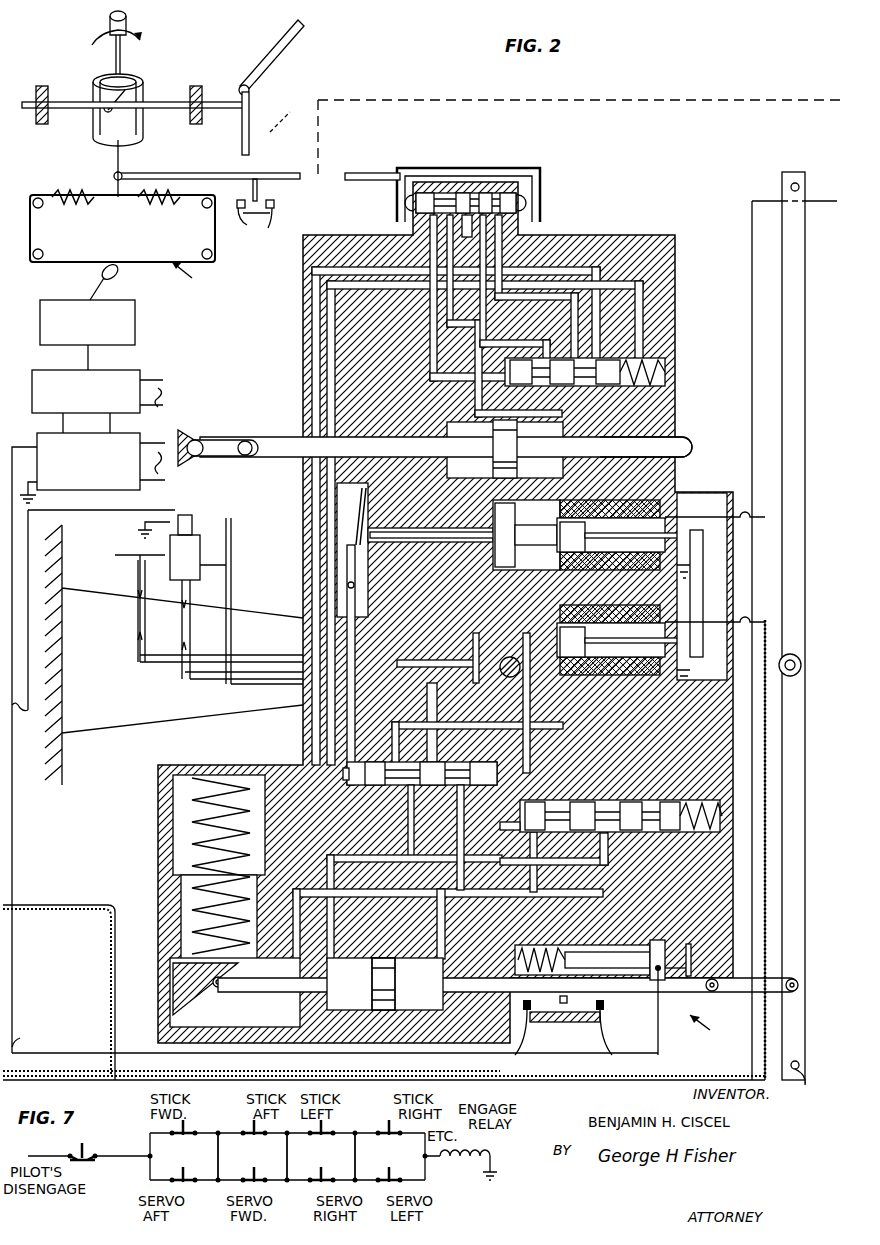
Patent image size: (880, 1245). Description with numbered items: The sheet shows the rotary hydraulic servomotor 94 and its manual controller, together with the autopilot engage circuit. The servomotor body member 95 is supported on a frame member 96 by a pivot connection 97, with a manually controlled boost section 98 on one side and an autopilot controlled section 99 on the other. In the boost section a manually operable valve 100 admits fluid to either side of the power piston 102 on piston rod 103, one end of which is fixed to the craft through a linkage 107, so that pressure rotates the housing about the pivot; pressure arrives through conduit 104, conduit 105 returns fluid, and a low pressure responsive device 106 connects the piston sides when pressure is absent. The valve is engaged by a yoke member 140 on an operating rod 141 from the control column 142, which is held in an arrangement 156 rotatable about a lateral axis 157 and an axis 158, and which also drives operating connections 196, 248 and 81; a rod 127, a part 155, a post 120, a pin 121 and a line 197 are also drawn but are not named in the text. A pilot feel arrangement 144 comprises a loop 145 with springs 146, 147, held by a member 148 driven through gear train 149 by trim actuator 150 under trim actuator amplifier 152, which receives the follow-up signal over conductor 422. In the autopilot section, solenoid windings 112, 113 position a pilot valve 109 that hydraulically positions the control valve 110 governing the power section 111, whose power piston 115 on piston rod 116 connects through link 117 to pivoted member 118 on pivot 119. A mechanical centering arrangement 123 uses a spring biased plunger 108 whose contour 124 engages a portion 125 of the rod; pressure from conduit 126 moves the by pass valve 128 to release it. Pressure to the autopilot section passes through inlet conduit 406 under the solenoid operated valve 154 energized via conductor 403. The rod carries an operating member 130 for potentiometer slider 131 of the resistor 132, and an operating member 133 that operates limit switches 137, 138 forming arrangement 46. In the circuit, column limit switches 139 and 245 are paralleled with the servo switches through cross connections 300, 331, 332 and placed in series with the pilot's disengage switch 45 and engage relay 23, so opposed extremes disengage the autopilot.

In FIG. 2, the servomotor 94 is at (445, 599).
In FIG. 2, the body member 95 is at (670, 318).
In FIG. 2, the frame member 96 is at (250, 718).
In FIG. 2, the pivot connection 97 is at (514, 677).
In FIG. 2, the boost section 98 is at (437, 177).
In FIG. 2, the autopilot controlled section 99 is at (705, 1033).
In FIG. 2, the manually operable valve 100 is at (470, 193).
In FIG. 2, the power piston 102 is at (517, 470).
In FIG. 2, the piston rod 103 is at (686, 437).
In FIG. 2, the conduit 104 is at (303, 437).
In FIG. 2, the conduit 105 is at (312, 358).
In FIG. 2, the low pressure responsive device 106 is at (604, 386).
In FIG. 2, the linkage 107 is at (220, 440).
In FIG. 2, the spring biased plunger 108 is at (170, 985).
In FIG. 2, the pilot valve 109 is at (398, 535).
In FIG. 2, the control valve 110 is at (432, 786).
In FIG. 2, the power section 111 is at (385, 984).
In FIG. 2, the solenoid winding 112 is at (623, 535).
In FIG. 2, the solenoid winding 113 is at (623, 640).
In FIG. 2, the power piston 115 is at (372, 975).
In FIG. 2, the piston rod 116 is at (678, 990).
In FIG. 2, the link 117 is at (745, 990).
In FIG. 2, the pivoted member 118 is at (801, 850).
In FIG. 2, the pivot 119 is at (800, 664).
In FIG. 2, the post 120 is at (799, 184).
In FIG. 2, the pivot pin 121 is at (816, 1076).
In FIG. 2, the mechanical centering arrangement 123 is at (180, 840).
In FIG. 2, the contour 124 is at (196, 1000).
In FIG. 2, the portion 125 is at (222, 988).
In FIG. 2, the conduit 126 is at (445, 716).
In FIG. 2, the rod 127 is at (253, 186).
In FIG. 2, the by pass valve 128 is at (660, 832).
In FIG. 2, the operating member 130 is at (691, 966).
In FIG. 2, the potentiometer slider 131 is at (660, 942).
In FIG. 2, the resistor 132 is at (540, 946).
In FIG. 2, the operating member 133 is at (567, 1002).
In FIG. 2, the limit switch 137 is at (604, 1005).
In FIG. 7, the limit switch 137 is at (278, 1188).
In FIG. 2, the limit switch 138 is at (529, 995).
In FIG. 7, the limit switch 138 is at (200, 1188).
In FIG. 2, the limit switch 139 is at (259, 223).
In FIG. 7, the limit switch 139 is at (195, 1123).
In FIG. 2, the yoke member 140 is at (420, 168).
In FIG. 2, the operating rod 141 is at (208, 173).
In FIG. 2, the control column 142 is at (125, 68).
In FIG. 2, the biasing or pilot feel arrangement 144 is at (199, 280).
In FIG. 2, the loop 145 is at (138, 226).
In FIG. 2, the spring 146 is at (155, 205).
In FIG. 2, the spring 147 is at (72, 205).
In FIG. 2, the member 148 is at (118, 274).
In FIG. 2, the gear train 149 is at (135, 335).
In FIG. 2, the trim actuator 150 is at (138, 372).
In FIG. 2, the trim actuator amplifier 152 is at (150, 435).
In FIG. 2, the solenoid operated valve 154 is at (178, 522).
In FIG. 2, the pickoff arm 155 is at (122, 553).
In FIG. 2, the arrangement 156 is at (135, 130).
In FIG. 2, the lateral axis 157 is at (95, 128).
In FIG. 2, the axis 158 is at (168, 104).
In FIG. 2, the operating connection 196 is at (596, 100).
In FIG. 2, the conductor 197 is at (752, 205).
In FIG. 2, the operating connection 248 is at (272, 132).
In FIG. 2, the conductor 403 is at (163, 511).
In FIG. 2, the inlet conduit 406 is at (178, 630).
In FIG. 2, the conductor 422 is at (384, 992).
In FIG. 2, the arrangement 46 is at (564, 1035).
In FIG. 2, the operating connection 81 is at (290, 45).
In FIG. 7, the pilot's disengage switch 45 is at (90, 1150).
In FIG. 7, the limit switch 245 is at (375, 1112).
In FIG. 7, the cross connection 300 is at (220, 1162).
In FIG. 7, the cross connection 331 is at (289, 1162).
In FIG. 7, the cross connection 332 is at (357, 1162).
In FIG. 7, the engage relay 23 is at (461, 1173).